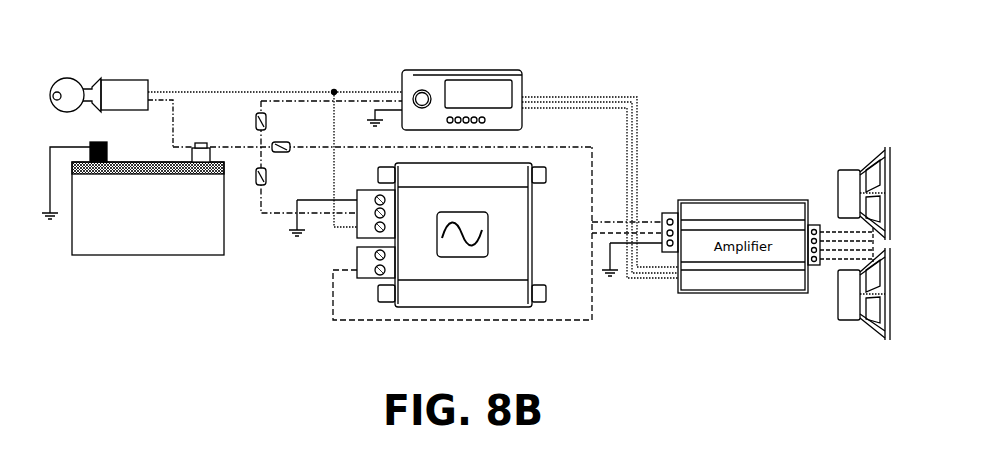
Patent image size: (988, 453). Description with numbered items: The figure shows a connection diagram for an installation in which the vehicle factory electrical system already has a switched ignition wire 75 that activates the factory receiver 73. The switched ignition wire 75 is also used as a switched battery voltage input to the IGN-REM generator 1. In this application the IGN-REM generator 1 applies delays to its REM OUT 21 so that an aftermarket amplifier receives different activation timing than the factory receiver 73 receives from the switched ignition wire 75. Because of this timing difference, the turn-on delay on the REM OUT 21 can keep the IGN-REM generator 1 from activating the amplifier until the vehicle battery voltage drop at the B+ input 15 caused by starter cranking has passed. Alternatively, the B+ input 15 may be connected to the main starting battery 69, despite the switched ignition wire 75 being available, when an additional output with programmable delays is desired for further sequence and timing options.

The IGN-REM generator 1 is at (362, 311).
The B+ input 15 is at (266, 222).
The REM OUT 21 is at (582, 333).
The main starting battery 69 is at (138, 262).
The factory receiver 73 is at (441, 62).
The switched ignition wire 75 is at (213, 84).